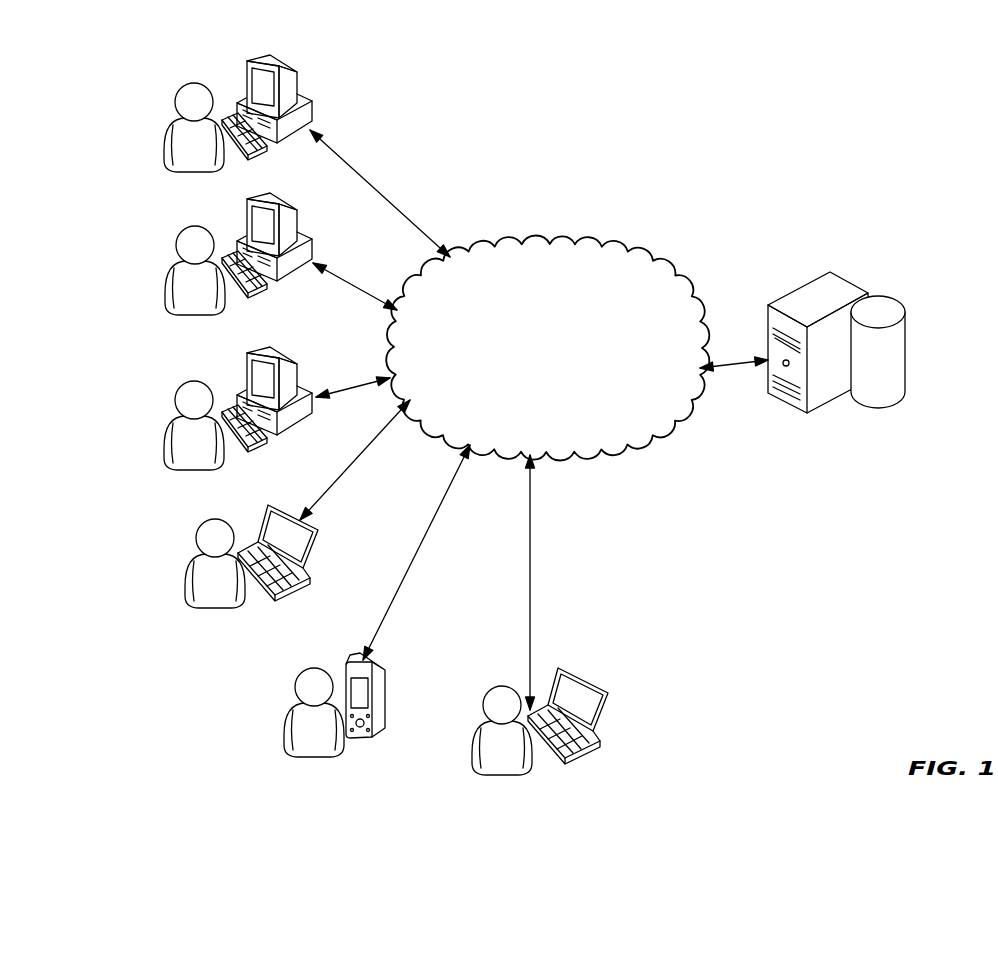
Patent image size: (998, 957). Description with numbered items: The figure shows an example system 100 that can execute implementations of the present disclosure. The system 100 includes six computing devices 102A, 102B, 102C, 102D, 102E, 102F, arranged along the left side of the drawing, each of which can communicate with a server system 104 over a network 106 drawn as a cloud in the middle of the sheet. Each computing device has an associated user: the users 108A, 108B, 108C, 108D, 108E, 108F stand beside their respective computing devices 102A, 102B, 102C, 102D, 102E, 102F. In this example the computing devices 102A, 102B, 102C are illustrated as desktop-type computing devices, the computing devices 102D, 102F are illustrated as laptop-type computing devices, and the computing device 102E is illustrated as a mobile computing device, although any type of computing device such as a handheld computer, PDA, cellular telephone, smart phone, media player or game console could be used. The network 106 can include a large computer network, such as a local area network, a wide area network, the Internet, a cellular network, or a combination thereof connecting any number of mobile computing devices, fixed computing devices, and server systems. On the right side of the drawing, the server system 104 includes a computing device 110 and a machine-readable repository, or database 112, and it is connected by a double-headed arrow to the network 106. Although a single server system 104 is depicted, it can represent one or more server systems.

The system 100 is at (705, 78).
The computing device 102A is at (302, 73).
The computing device 102B is at (300, 211).
The computing device 102C is at (300, 366).
The computing device 102D is at (319, 530).
The computing device 102E is at (387, 678).
The computing device 102F is at (608, 696).
The server system 104 is at (849, 365).
The network 106 is at (527, 243).
The user 108A is at (186, 173).
The user 108B is at (186, 316).
The user 108C is at (186, 471).
The user 108D is at (207, 609).
The user 108E is at (304, 758).
The user 108F is at (492, 776).
The computing device 110 is at (846, 279).
The database 112 is at (903, 308).